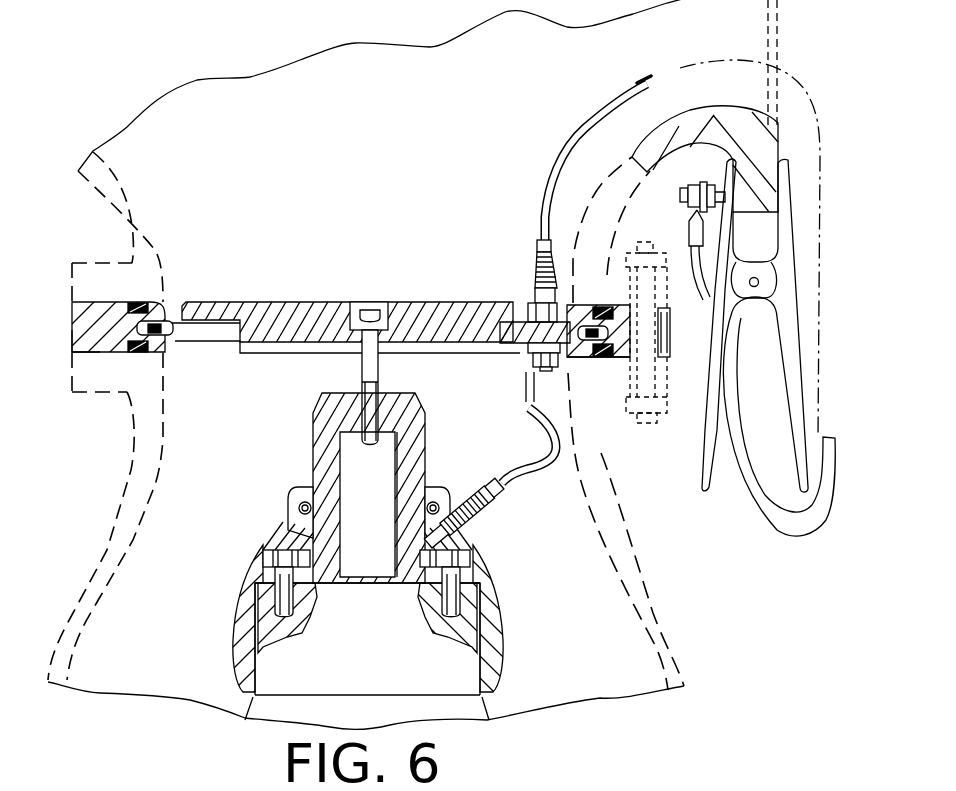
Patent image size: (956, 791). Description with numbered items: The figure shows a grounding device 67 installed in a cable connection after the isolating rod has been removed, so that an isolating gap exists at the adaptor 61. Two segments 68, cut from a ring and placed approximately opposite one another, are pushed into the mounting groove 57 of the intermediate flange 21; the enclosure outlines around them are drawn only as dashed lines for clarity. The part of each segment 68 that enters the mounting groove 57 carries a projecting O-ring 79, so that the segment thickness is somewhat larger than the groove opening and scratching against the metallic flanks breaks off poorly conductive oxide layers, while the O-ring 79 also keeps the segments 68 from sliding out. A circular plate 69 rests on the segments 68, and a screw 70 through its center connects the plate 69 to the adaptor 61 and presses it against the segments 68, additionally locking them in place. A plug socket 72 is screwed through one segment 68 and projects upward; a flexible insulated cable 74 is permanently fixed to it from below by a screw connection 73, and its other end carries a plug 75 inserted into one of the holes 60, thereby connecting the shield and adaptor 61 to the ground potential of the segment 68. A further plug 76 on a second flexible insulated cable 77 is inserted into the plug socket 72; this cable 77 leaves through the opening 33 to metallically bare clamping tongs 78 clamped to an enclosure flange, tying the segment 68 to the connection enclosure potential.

The intermediate flange 21 is at (115, 320).
The opening 33 is at (740, 38).
The mounting groove 57 is at (72, 347).
The holes 60 is at (282, 518).
The adaptor 61 is at (330, 463).
The grounding device 67 is at (236, 165).
The segments 68 is at (197, 327).
The plate 69 is at (271, 325).
The screw 70 is at (362, 312).
The plug socket 72 is at (527, 306).
The screw connection 73 is at (530, 352).
The flexible insulated cable 74 is at (545, 455).
The plug 75 is at (493, 513).
The further plug 76 is at (534, 262).
The flexible insulated cable 77 is at (553, 178).
The clamping tongs 78 is at (709, 450).
The O-ring 79 is at (153, 348).